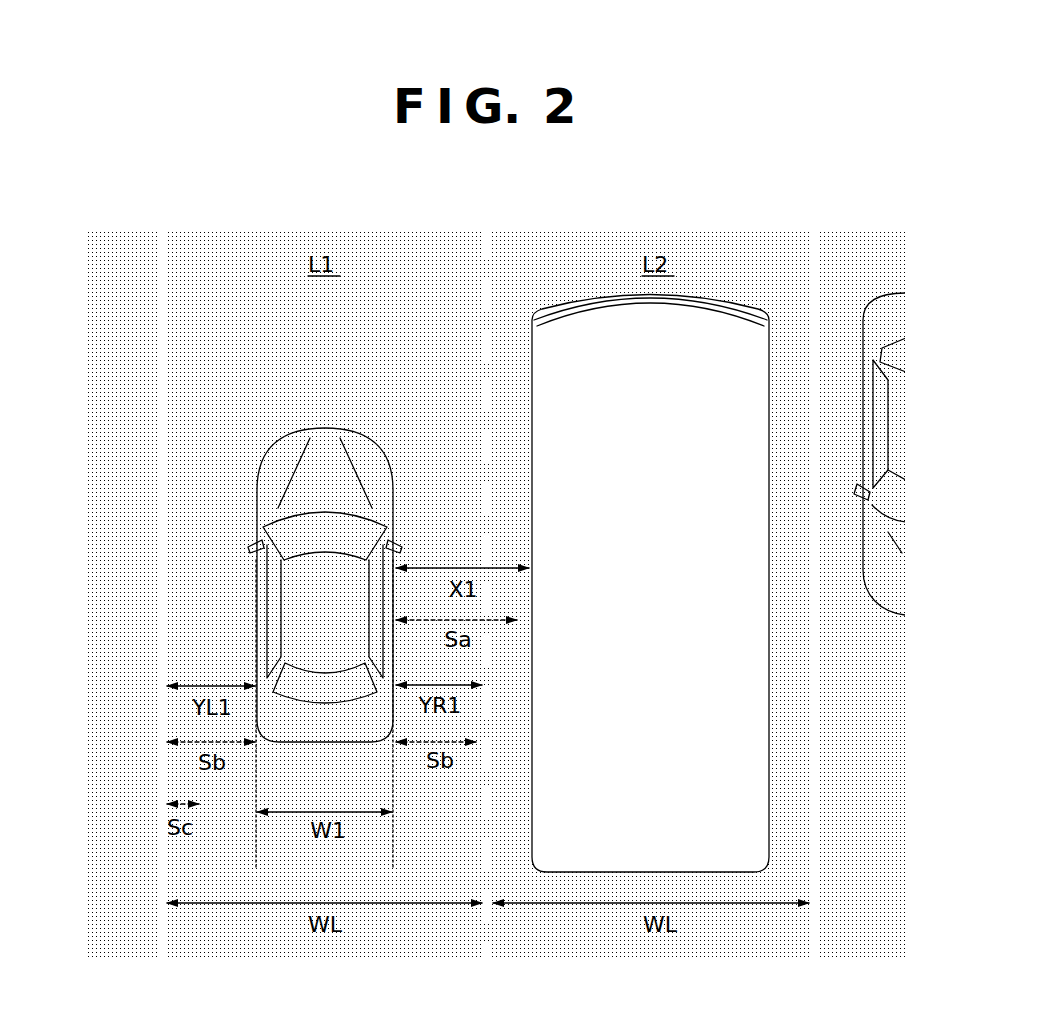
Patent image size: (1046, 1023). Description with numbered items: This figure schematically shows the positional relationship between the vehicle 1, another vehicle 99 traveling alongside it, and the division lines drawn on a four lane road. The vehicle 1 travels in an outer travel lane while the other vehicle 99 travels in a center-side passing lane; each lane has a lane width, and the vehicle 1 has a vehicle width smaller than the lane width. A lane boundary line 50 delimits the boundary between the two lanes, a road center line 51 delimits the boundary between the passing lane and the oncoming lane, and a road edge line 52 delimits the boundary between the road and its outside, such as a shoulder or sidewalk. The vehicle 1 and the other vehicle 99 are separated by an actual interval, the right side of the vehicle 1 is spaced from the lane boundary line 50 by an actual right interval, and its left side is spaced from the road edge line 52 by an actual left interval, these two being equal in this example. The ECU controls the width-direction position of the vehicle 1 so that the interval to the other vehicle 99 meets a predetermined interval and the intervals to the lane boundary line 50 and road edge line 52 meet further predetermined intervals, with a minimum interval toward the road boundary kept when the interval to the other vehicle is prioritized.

The vehicle 1 is at (322, 427).
The other vehicle 99 is at (592, 296).
The lane boundary line 50 is at (492, 915).
The road center line 51 is at (815, 813).
The road edge line 52 is at (162, 848).